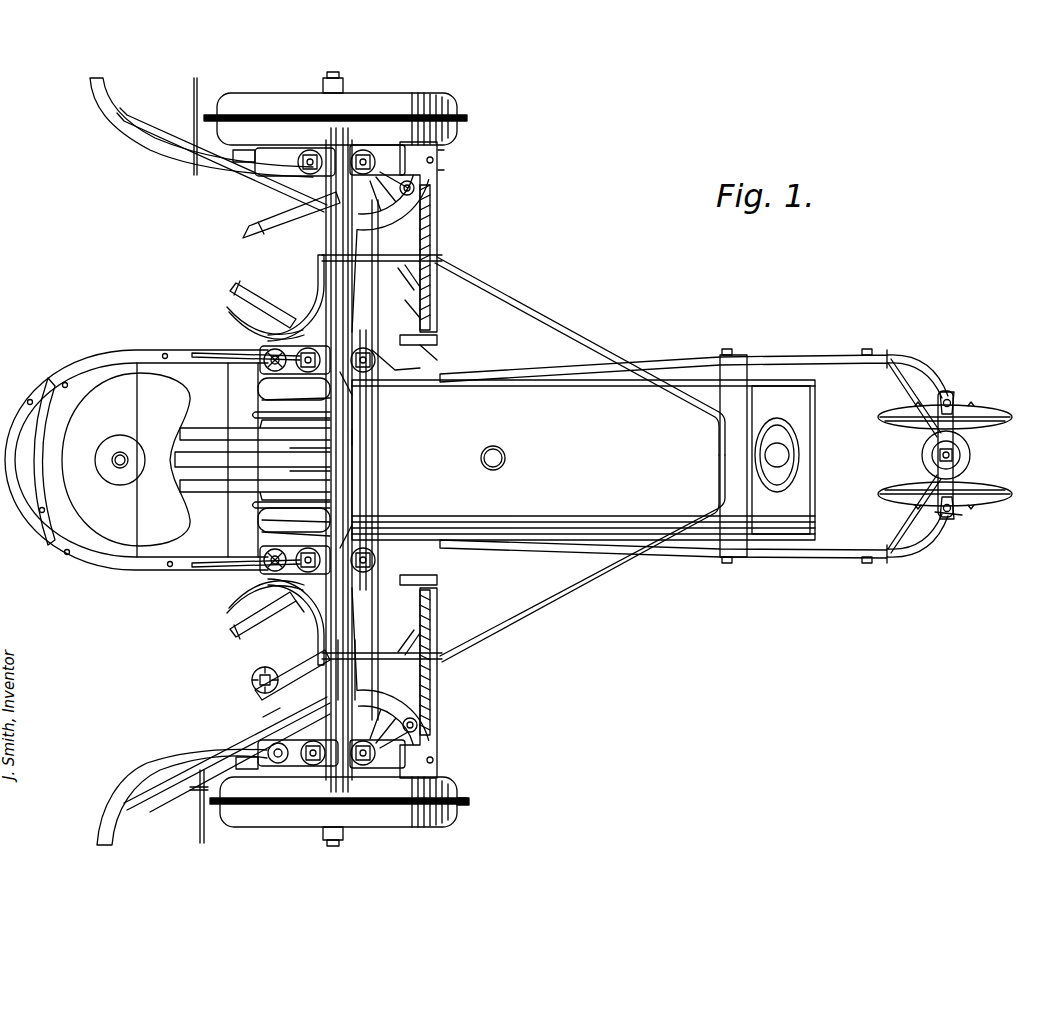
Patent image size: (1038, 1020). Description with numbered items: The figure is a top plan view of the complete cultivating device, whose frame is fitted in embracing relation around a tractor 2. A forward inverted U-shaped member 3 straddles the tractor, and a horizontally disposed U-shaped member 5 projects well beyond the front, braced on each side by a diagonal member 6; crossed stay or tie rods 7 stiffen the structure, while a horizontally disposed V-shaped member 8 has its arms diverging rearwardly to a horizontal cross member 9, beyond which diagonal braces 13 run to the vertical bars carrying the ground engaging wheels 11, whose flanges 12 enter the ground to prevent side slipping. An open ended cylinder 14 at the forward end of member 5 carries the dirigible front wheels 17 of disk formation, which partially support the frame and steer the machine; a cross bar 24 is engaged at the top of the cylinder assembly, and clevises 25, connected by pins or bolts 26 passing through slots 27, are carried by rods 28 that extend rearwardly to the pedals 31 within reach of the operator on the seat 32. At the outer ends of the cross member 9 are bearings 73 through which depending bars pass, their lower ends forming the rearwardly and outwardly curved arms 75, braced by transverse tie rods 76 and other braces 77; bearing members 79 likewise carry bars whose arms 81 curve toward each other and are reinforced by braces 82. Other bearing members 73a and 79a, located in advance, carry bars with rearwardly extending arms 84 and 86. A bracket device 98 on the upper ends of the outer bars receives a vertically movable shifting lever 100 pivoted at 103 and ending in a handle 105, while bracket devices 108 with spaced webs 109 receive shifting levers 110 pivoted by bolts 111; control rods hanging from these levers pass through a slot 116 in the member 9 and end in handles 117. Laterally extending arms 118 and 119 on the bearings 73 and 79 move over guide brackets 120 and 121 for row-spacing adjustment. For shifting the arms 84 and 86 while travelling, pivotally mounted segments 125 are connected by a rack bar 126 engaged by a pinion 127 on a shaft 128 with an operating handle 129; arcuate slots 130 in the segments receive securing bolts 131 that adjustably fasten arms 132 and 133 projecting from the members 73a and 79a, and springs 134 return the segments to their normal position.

The tractor 2 is at (583, 460).
The forward inverted U-shaped member 3 is at (735, 365).
The horizontally disposed U-shaped member 5 is at (690, 357).
The diagonal member 6 is at (805, 557).
The stay or tie rods 7 is at (560, 330).
The horizontally disposed V-shaped member 8 is at (608, 558).
The horizontal cross member 9 is at (330, 235).
The ground engaging wheels 11 is at (455, 786).
The flanges 12 is at (470, 803).
The braces 13 is at (235, 162).
The open ended cylinder 14 is at (971, 458).
The dirigible front wheels 17 is at (995, 410).
The cross bar 24 is at (955, 436).
The clevises 25 is at (949, 392).
The pins or bolts 26 is at (950, 518).
The slots 27 is at (962, 514).
The rods 28 is at (925, 550).
The pedals 31 is at (258, 388).
The seat 32 is at (126, 459).
The bearings 73 is at (303, 150).
The bearing members 73a is at (365, 150).
The arms 75 is at (166, 765).
The tie rods 76 is at (198, 830).
The braces 77 is at (182, 788).
The bearing members 79 is at (310, 345).
The bearing members 79a is at (370, 372).
The arms 81 is at (145, 350).
The braces 82 is at (210, 352).
The arms 84 is at (242, 232).
The arms 86 is at (258, 295).
The bracket device 98 is at (350, 150).
The shifting lever 100 is at (340, 679).
The pivots 103 is at (370, 650).
The handles 105 is at (285, 455).
The bracket devices 108 is at (355, 375).
The webs 109 is at (322, 540).
The shifting levers 110 is at (355, 440).
The bolts 111 is at (260, 398).
The slot 116 is at (292, 410).
The handles 117 is at (262, 433).
The laterally extending arms 118 is at (280, 764).
The laterally extending arms 119 is at (262, 535).
The guide brackets 120 is at (280, 720).
The guide brackets 121 is at (302, 610).
The segments 125 is at (438, 150).
The rack bar 126 is at (432, 192).
The pinion 127 is at (443, 258).
The shaft 128 is at (461, 678).
The operating handle 129 is at (228, 308).
The arcuate slots 130 is at (445, 165).
The securing bolts 131 is at (415, 192).
The arms 132 is at (415, 180).
The arms 133 is at (422, 370).
The springs 134 is at (422, 305).